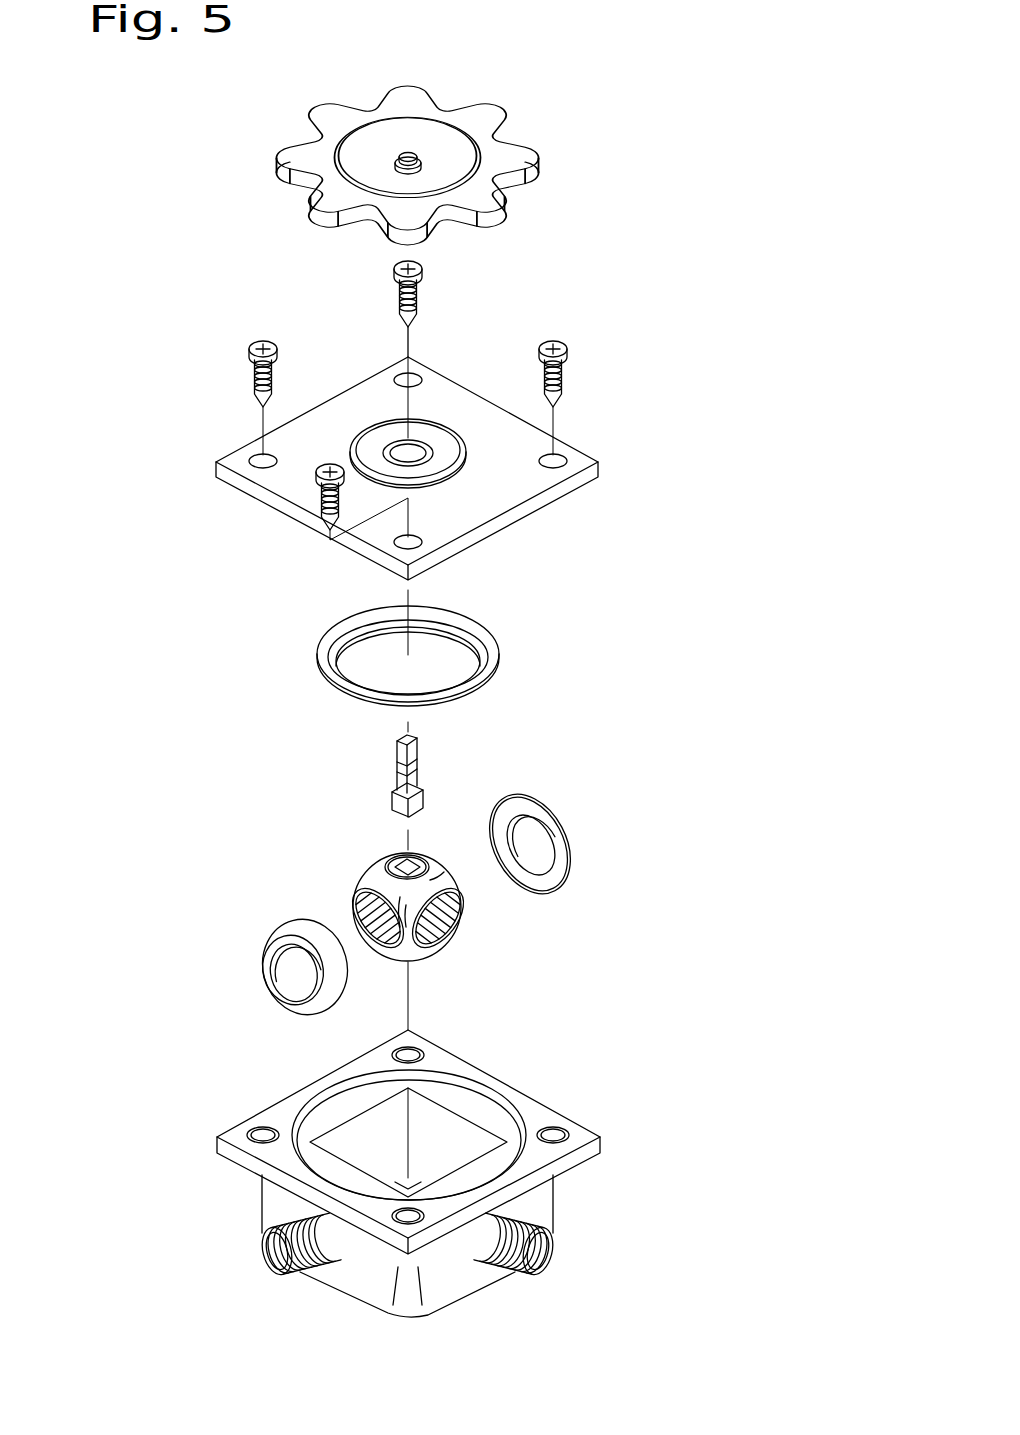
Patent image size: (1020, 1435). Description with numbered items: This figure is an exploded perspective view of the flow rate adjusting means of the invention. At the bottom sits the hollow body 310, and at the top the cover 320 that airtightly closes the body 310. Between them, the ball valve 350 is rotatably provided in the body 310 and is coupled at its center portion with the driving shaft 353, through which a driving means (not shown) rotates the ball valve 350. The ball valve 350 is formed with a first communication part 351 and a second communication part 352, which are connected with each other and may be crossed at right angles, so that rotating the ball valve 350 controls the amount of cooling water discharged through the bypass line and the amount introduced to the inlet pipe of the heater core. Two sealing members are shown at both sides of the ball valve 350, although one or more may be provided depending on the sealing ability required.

The hollow body 310 is at (580, 1136).
The cover 320 is at (567, 482).
The ball valve 350 is at (410, 962).
The first communication part 351 is at (357, 897).
The second communication part 352 is at (460, 907).
The driving shaft 353 is at (393, 787).